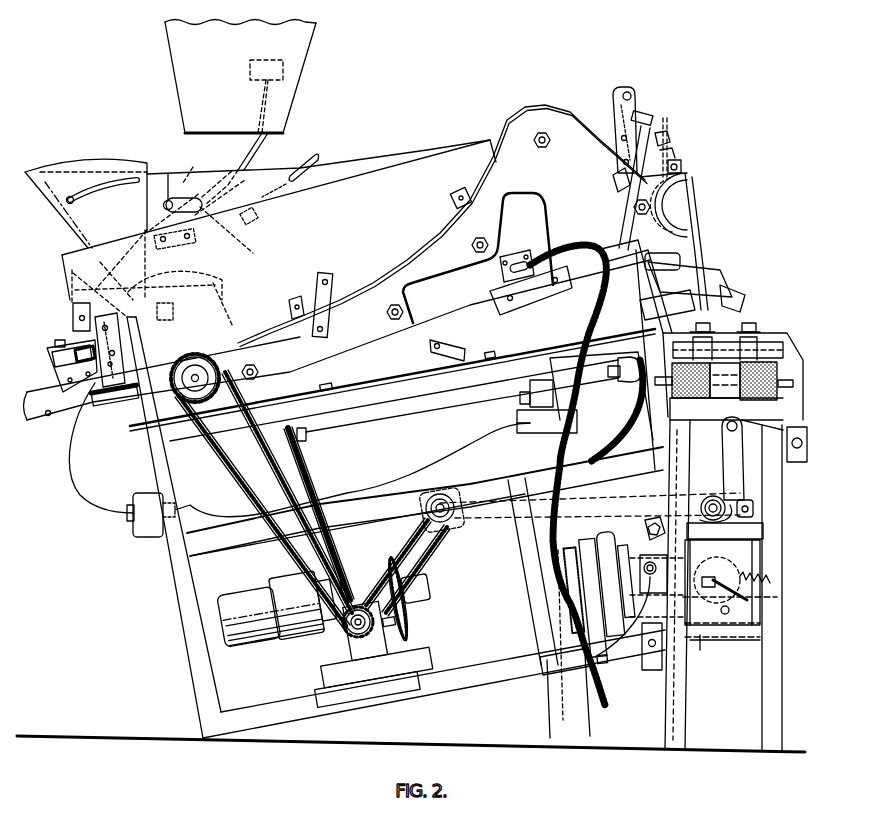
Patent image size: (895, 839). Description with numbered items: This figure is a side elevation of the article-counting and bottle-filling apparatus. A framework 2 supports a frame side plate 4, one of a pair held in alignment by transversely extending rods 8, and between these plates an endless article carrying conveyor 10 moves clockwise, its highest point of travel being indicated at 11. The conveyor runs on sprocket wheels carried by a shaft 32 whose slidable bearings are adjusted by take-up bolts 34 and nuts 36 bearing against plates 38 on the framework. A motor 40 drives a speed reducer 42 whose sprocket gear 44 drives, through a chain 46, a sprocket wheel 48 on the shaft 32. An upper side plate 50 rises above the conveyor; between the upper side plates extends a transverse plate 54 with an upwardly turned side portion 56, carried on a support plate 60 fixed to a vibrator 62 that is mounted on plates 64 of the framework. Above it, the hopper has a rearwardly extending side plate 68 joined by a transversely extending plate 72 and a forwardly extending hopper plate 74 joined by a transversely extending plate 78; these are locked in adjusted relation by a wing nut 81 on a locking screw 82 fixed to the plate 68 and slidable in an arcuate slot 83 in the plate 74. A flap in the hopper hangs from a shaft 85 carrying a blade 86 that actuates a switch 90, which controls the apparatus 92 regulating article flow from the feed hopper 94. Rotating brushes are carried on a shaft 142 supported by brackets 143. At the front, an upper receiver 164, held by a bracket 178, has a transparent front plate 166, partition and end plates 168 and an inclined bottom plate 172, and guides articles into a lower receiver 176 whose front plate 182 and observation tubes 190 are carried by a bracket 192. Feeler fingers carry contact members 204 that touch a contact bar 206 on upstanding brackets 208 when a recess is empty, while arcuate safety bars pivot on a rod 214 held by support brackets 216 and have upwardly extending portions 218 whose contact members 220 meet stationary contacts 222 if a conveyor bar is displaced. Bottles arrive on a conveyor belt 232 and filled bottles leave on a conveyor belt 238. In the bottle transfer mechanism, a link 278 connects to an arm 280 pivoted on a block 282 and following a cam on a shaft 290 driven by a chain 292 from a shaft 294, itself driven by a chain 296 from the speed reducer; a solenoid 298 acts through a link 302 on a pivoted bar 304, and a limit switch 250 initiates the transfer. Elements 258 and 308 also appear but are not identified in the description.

The framework 2 is at (375, 405).
The frame side plate 4 is at (565, 202).
The transversely extending rods 8 is at (541, 148).
The endless article carrying conveyor 10 is at (494, 112).
The highestmost portion of the conveyor track 11 is at (552, 82).
The shaft 32 is at (199, 377).
The take-up bolts 34 is at (105, 405).
The nuts 36 is at (115, 430).
The plates 38 is at (130, 405).
The motor 40 is at (263, 580).
The speed reducer 42 is at (369, 630).
The sprocket gear 44 is at (335, 647).
The chain 46 is at (292, 556).
The sprocket wheel 48 is at (218, 380).
The upper side plate 50 is at (325, 245).
The transverse plate 54 is at (74, 307).
The upwardly turned side portion 56 is at (222, 286).
The support plate 60 is at (133, 350).
The vibrator 62 is at (58, 372).
The plates 64 is at (75, 420).
The hopper side plate 68 is at (268, 177).
The transversely extending plate 72 is at (263, 219).
The hopper plate 74 is at (92, 163).
The transversely extending plate 78 is at (65, 232).
The wing nut 81 is at (61, 189).
The locking screw 82 is at (98, 230).
The arcuate slot 83 is at (85, 206).
The transversely extending shaft 85 is at (165, 180).
The blade 86 is at (195, 185).
The switch 90 is at (210, 197).
The control apparatus 92 is at (248, 70).
The feed hopper 94 is at (183, 88).
The shaft 142 is at (332, 281).
The brackets 143 is at (318, 292).
The upper article receiver 164 is at (740, 203).
The transversely extending plate 166 is at (690, 233).
The partition plates and end plates 168 is at (681, 168).
The inclined transversely extending plate 172 is at (688, 205).
The lower receiver 176 is at (750, 263).
The bracket 178 is at (585, 475).
The transversely extending front plate 182 is at (700, 258).
The observation tubes 190 is at (744, 298).
The bracket 192 is at (668, 288).
The contact member 204 is at (617, 108).
The contact bar 206 is at (626, 90).
The upstanding brackets 208 is at (640, 106).
The transversely extending rod 214 is at (684, 176).
The support brackets 216 is at (622, 186).
The upwardly extending portions 218 is at (678, 155).
The contact members 220 is at (672, 143).
The stationary contact 222 is at (645, 126).
The conveyor belt 232 is at (766, 390).
The conveyor belt 238 is at (682, 391).
The limit switch 250 is at (504, 268).
The roller frame 258 is at (780, 340).
The link 278 is at (745, 438).
The arm 280 is at (760, 440).
The block 282 is at (727, 625).
The shaft 290 is at (711, 494).
The chain 292 is at (615, 496).
The shaft 294 is at (452, 522).
The chain 296 is at (432, 560).
The solenoid 298 is at (688, 652).
The link 302 is at (748, 660).
The bar 304 is at (760, 541).
The spring 308 is at (767, 568).